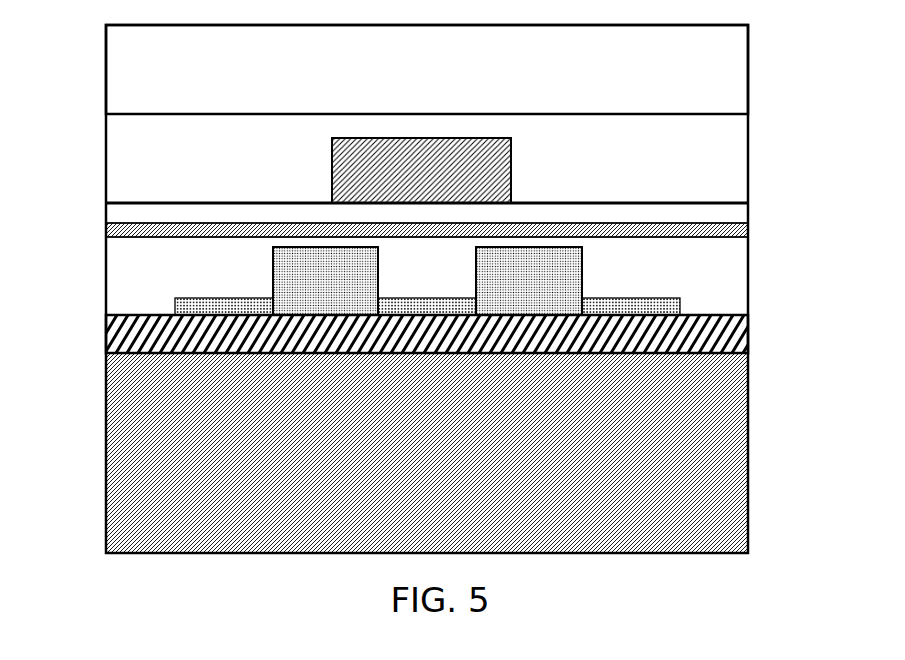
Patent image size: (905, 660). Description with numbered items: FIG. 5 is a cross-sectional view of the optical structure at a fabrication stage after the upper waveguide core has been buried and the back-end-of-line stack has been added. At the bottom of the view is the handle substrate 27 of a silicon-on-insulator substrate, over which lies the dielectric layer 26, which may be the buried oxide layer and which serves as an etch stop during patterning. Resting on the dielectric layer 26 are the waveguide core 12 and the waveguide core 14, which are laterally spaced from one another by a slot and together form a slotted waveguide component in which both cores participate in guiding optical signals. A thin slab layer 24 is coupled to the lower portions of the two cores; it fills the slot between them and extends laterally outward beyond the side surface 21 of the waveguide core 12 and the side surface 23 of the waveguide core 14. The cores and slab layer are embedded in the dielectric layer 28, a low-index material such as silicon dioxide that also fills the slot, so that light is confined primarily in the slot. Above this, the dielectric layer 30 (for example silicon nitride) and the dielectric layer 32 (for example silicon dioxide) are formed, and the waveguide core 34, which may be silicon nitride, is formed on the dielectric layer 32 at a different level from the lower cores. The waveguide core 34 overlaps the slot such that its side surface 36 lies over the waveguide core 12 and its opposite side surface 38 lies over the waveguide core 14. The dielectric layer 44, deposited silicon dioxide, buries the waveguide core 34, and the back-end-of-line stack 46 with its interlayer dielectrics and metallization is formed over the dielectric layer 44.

The waveguide core 12 is at (295, 258).
The waveguide core 14 is at (548, 258).
The side surface 21 is at (272, 282).
The side surface 23 is at (582, 282).
The slab layer 24 is at (183, 303).
The dielectric layer 26 is at (710, 333).
The handle substrate 27 is at (138, 472).
The dielectric layer 28 is at (127, 258).
The dielectric layer 30 is at (733, 232).
The dielectric layer 32 is at (127, 216).
The waveguide core 34 is at (473, 156).
The side surface 36 is at (332, 168).
The side surface 38 is at (511, 184).
The dielectric layer 44 is at (127, 139).
The back-end-of-line stack 46 is at (705, 73).